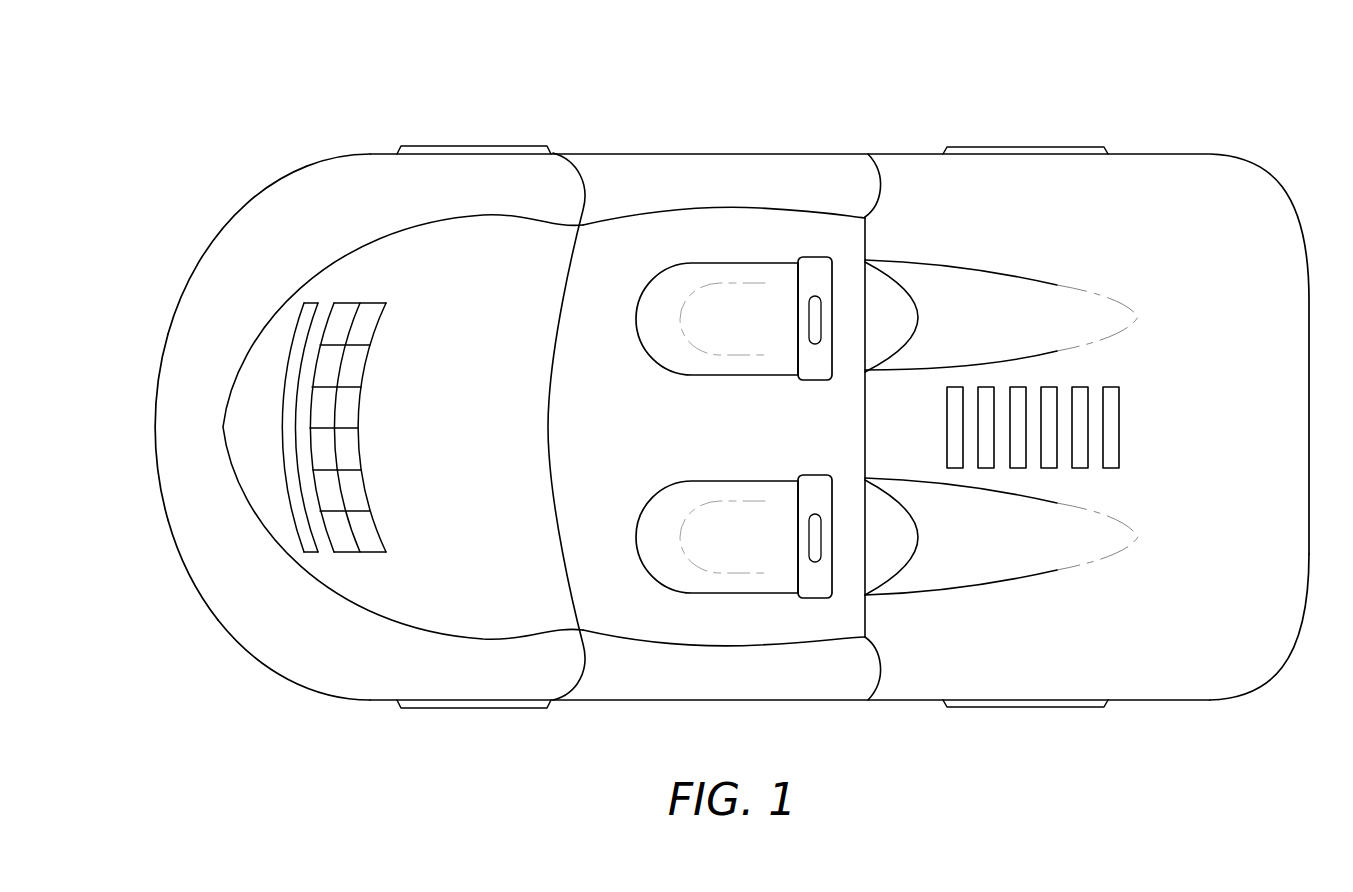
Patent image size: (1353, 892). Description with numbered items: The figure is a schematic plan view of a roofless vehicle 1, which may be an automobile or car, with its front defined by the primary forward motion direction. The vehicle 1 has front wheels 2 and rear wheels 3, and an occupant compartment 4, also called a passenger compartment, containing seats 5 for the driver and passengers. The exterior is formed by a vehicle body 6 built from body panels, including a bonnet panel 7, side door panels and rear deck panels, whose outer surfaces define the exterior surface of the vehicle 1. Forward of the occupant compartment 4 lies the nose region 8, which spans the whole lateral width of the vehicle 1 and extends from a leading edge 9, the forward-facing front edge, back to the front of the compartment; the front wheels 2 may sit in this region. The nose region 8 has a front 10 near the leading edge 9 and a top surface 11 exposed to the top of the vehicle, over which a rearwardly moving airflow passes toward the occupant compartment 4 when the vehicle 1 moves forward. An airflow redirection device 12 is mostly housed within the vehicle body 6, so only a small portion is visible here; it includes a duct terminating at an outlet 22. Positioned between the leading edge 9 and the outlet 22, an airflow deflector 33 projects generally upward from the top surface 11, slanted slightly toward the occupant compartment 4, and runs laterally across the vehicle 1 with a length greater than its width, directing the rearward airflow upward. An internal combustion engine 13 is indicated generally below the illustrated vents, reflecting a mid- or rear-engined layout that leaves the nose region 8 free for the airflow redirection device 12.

The vehicle 1 is at (876, 114).
The front wheels 2 is at (473, 146).
The rear wheels 3 is at (1025, 147).
The occupant compartment 4 is at (793, 225).
The seats 5 is at (738, 272).
The vehicle body 6 is at (272, 666).
The bonnet panel 7 is at (226, 600).
The nose region 8 is at (152, 425).
The leading edge 9 is at (173, 306).
The front of the nose region 10 is at (206, 552).
The top surface 11 is at (407, 338).
The airflow redirection device 12 is at (295, 331).
The internal combustion engine 13 is at (1120, 426).
The outlet 22 is at (343, 303).
The airflow deflector 33 is at (292, 480).